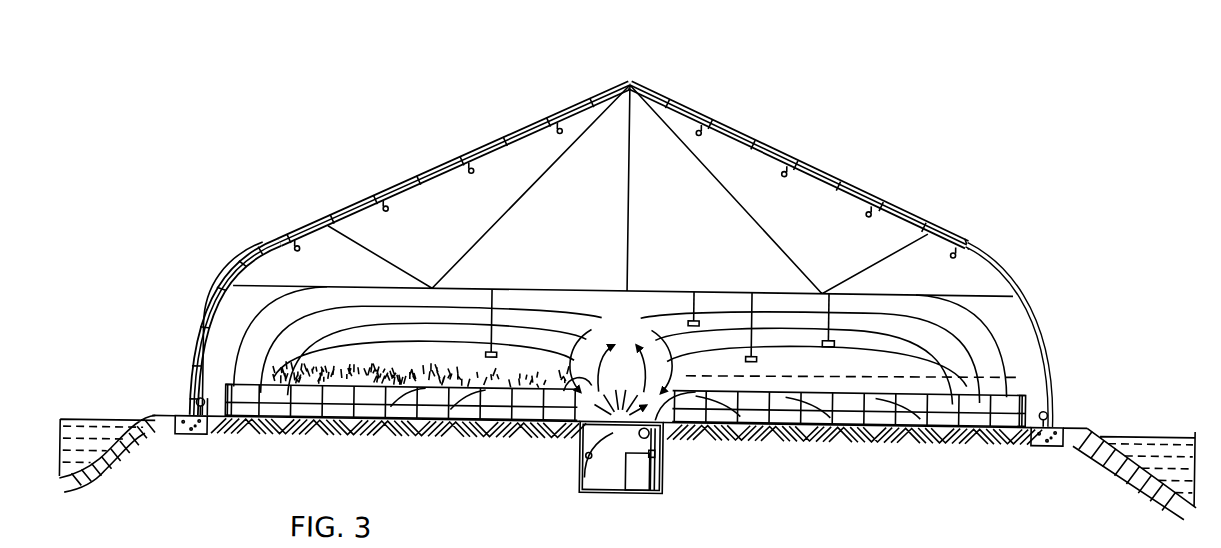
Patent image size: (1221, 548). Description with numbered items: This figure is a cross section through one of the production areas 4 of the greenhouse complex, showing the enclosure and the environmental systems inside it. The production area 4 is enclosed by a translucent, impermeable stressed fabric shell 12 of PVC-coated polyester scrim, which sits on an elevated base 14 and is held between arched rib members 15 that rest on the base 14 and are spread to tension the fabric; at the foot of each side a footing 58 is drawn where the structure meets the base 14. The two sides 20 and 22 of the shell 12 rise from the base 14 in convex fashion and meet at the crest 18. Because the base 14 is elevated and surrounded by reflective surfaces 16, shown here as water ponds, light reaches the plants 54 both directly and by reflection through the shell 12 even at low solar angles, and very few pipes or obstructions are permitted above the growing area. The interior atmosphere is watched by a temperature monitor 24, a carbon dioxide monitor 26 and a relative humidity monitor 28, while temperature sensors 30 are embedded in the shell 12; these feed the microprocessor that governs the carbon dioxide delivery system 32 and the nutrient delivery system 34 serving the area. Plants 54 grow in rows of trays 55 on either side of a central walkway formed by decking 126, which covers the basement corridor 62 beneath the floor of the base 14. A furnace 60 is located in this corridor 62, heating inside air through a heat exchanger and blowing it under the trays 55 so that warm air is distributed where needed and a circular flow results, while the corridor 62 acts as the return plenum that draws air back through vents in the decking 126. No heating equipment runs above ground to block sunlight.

The production area 4 is at (606, 339).
The stressed fabric shell 12 is at (208, 322).
The base 14 is at (372, 430).
The arched rib members 15 is at (216, 339).
The reflective surfaces 16 is at (122, 427).
The crest 18 is at (634, 80).
The side 20 is at (1058, 346).
The side 22 is at (256, 258).
The temperature monitor 24 is at (502, 354).
The carbon dioxide monitor 26 is at (691, 322).
The relative humidity monitor 28 is at (838, 341).
The temperature sensor 30 is at (758, 143).
The carbon dioxide delivery system 32 is at (669, 455).
The nutrient delivery system 34 is at (558, 463).
The plants 54 is at (349, 380).
The trays 55 is at (474, 430).
The foundation 58 is at (212, 444).
The furnace 60 is at (637, 490).
The basement corridor 62 is at (587, 488).
The decking 126 is at (585, 468).